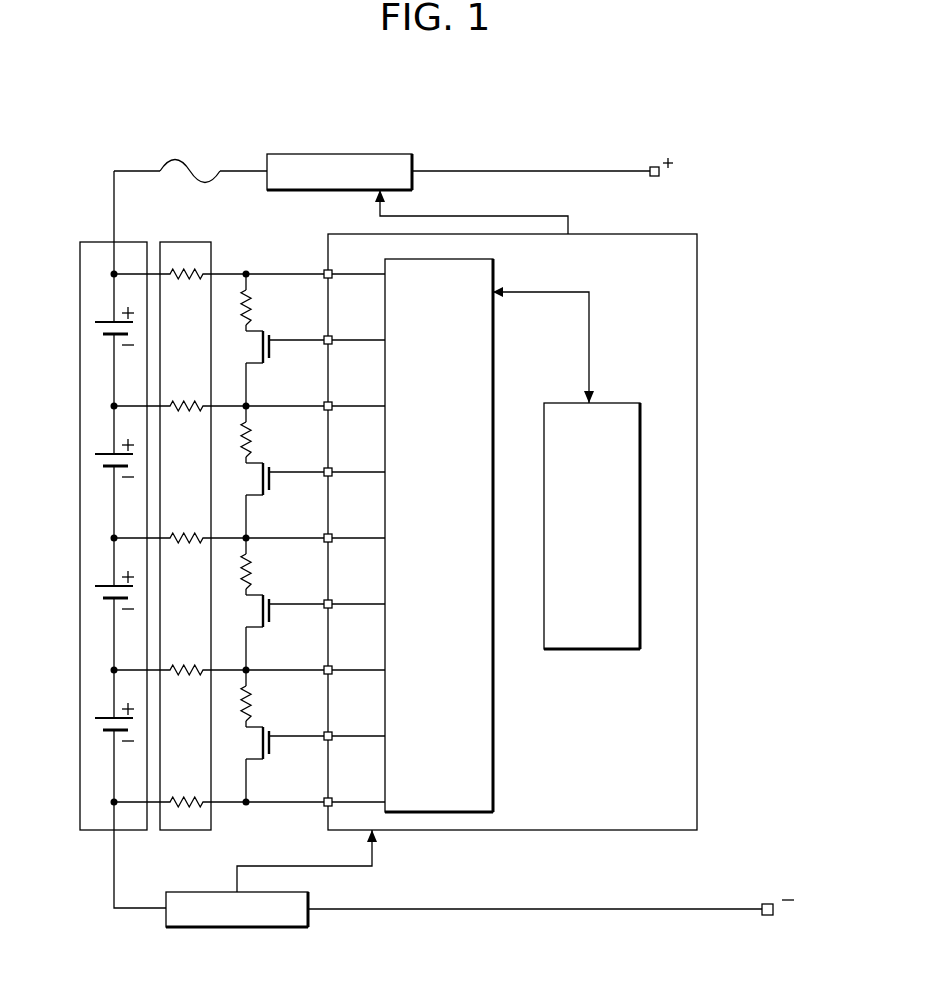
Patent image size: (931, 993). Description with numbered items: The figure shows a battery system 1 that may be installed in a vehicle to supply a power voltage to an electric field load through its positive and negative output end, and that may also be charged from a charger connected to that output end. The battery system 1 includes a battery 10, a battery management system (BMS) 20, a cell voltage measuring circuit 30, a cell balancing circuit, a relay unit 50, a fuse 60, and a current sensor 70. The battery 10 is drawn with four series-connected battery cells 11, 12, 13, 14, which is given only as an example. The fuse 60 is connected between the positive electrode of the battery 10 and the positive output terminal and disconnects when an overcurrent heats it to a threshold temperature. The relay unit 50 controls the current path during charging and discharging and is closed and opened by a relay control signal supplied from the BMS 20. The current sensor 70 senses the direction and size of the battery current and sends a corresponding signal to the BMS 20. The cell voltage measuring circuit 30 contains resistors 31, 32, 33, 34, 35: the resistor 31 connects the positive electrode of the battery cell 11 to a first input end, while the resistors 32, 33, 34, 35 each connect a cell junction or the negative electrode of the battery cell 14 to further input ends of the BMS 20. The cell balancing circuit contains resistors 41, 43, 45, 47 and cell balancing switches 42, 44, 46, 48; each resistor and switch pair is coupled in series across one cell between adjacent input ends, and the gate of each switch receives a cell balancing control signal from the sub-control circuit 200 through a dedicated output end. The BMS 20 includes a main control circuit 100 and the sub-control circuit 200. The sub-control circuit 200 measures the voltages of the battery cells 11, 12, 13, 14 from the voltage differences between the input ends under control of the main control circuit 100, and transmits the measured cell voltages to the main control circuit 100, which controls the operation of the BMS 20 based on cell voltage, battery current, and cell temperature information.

The battery system 1 is at (460, 142).
The battery 10 is at (85, 242).
The battery cell 11 is at (109, 340).
The battery cell 12 is at (109, 472).
The battery cell 13 is at (109, 604).
The battery cell 14 is at (109, 736).
The battery management system (BMS) 20 is at (460, 830).
The cell voltage measuring circuit 30 is at (185, 242).
The resistor 31 is at (186, 288).
The resistor 32 is at (186, 420).
The resistor 33 is at (186, 552).
The resistor 34 is at (186, 684).
The resistor 35 is at (186, 787).
The resistor 41 is at (232, 299).
The cell balancing switch 42 is at (257, 347).
The resistor 43 is at (232, 431).
The cell balancing switch 44 is at (257, 479).
The resistor 45 is at (232, 563).
The cell balancing switch 46 is at (257, 611).
The resistor 47 is at (232, 695).
The cell balancing switch 48 is at (257, 743).
The relay unit 50 is at (340, 153).
The fuse 60 is at (192, 152).
The current sensor 70 is at (237, 927).
The main control circuit 100 is at (591, 650).
The sub-control circuit 200 is at (494, 265).